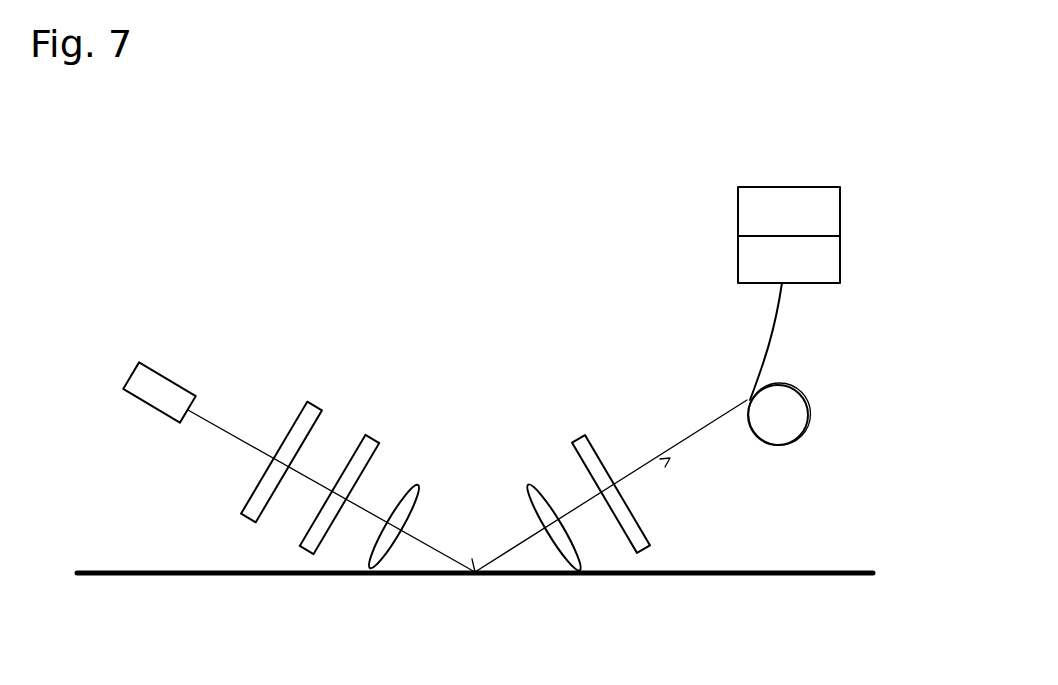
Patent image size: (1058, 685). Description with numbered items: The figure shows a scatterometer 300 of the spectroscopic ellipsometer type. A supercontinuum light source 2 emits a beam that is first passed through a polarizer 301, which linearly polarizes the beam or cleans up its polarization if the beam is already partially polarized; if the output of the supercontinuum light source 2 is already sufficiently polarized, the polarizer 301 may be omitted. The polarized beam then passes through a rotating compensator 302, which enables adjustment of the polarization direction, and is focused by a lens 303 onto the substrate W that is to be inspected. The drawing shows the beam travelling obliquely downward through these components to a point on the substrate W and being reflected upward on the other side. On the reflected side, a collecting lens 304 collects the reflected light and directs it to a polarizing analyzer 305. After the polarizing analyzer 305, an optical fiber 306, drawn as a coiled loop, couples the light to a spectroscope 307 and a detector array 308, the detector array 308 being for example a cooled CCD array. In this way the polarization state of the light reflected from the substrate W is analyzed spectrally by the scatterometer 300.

The scatterometer 300 is at (229, 200).
The supercontinuum light source 2 is at (147, 362).
The polarizer 301 is at (306, 403).
The rotating compensator 302 is at (372, 435).
The lens 303 is at (418, 486).
The collecting lens 304 is at (529, 486).
The polarizing analyzer 305 is at (597, 447).
The optical fiber 306 is at (807, 398).
The spectroscope 307 is at (738, 258).
The detector array 308 is at (738, 220).
The substrate W is at (227, 571).